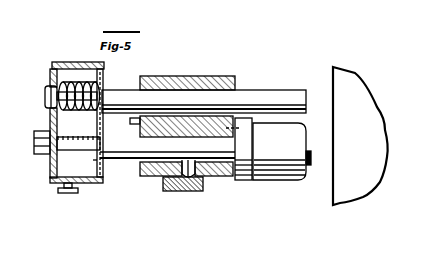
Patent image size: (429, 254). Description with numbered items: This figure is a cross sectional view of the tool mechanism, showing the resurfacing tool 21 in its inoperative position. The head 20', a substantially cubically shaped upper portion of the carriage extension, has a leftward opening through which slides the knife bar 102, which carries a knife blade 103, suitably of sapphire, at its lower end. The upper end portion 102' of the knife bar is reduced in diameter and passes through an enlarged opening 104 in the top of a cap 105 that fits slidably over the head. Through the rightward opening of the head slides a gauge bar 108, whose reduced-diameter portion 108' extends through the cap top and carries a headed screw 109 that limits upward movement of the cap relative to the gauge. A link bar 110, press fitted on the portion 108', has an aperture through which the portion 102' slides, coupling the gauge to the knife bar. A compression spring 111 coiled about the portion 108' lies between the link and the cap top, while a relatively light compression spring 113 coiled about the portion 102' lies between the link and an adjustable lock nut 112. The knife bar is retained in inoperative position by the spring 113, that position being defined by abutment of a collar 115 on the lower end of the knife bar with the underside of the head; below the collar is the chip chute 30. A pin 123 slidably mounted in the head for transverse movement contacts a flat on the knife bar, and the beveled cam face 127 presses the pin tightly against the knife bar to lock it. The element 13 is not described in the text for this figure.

The wall 13 is at (360, 92).
The head 20' is at (192, 74).
The resurfacing tool 21 is at (310, 139).
The chip chute 30 is at (279, 151).
The knife bar 102 is at (176, 164).
The upper end portion of the knife bar 102' is at (83, 194).
The knife blade 103 is at (311, 156).
The enlarged opening 104 is at (52, 170).
The cap 105 is at (60, 64).
The gauge bar 108 is at (204, 87).
The reduced-diameter portion of the gauge bar 108' is at (77, 70).
The headed screw 109 is at (46, 100).
The link bar 110 is at (97, 121).
The compression spring 111 is at (68, 82).
The adjustable lock nut 112 is at (42, 132).
The relatively light compression spring 113 is at (97, 163).
The collar 115 is at (243, 181).
The pin 123 is at (192, 168).
The cam face 127 is at (190, 191).